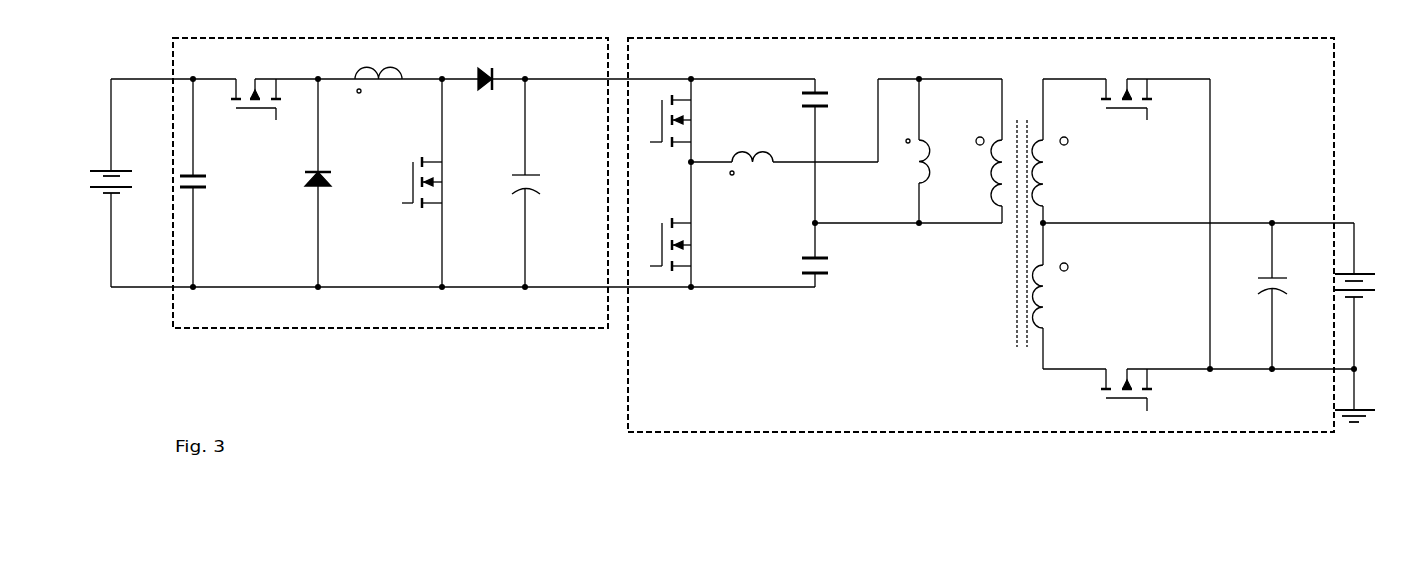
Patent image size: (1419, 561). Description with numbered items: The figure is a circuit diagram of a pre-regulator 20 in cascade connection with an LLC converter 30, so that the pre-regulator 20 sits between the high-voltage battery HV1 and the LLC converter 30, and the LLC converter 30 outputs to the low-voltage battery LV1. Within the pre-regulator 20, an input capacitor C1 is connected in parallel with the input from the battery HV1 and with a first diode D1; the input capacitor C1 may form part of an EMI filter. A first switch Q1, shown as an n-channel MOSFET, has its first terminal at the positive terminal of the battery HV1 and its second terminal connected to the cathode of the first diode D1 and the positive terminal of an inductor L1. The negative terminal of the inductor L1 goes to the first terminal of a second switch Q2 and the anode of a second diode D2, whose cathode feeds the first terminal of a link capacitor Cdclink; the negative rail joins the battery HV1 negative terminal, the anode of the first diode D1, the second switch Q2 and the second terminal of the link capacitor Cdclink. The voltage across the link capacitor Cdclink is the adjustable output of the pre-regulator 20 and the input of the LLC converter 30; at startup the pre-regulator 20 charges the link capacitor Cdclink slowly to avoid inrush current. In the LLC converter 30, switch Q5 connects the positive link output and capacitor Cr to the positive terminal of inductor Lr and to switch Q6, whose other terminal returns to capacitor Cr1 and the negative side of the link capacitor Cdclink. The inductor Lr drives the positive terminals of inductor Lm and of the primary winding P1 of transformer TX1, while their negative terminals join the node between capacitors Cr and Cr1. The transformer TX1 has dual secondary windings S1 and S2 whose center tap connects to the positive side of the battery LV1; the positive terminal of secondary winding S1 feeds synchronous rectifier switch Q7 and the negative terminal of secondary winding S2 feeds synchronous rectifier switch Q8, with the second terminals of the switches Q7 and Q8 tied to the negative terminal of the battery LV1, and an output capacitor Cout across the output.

The pre-regulator 20 is at (398, 339).
The LLC converter 30 is at (1040, 441).
The battery HV1 is at (129, 183).
The input capacitor C1 is at (205, 183).
The first switch Q1 is at (240, 99).
The first diode D1 is at (300, 183).
The inductor L1 is at (378, 90).
The second switch Q2 is at (422, 183).
The second diode D2 is at (485, 69).
The link capacitor Cdclink is at (558, 183).
The switch Q5 is at (670, 130).
The switch Q6 is at (670, 256).
The inductor Lr is at (784, 173).
The capacitor Cr is at (826, 151).
The capacitor Cr1 is at (829, 255).
The inductor Lm is at (931, 151).
The primary winding P1 is at (980, 151).
The transformer TX1 is at (1061, 224).
The secondary winding S1 is at (1053, 151).
The secondary winding S2 is at (1054, 296).
The switch Q7 is at (1112, 99).
The switch Q8 is at (1112, 390).
The output capacitor Cout is at (1293, 296).
The battery LV1 is at (1372, 322).